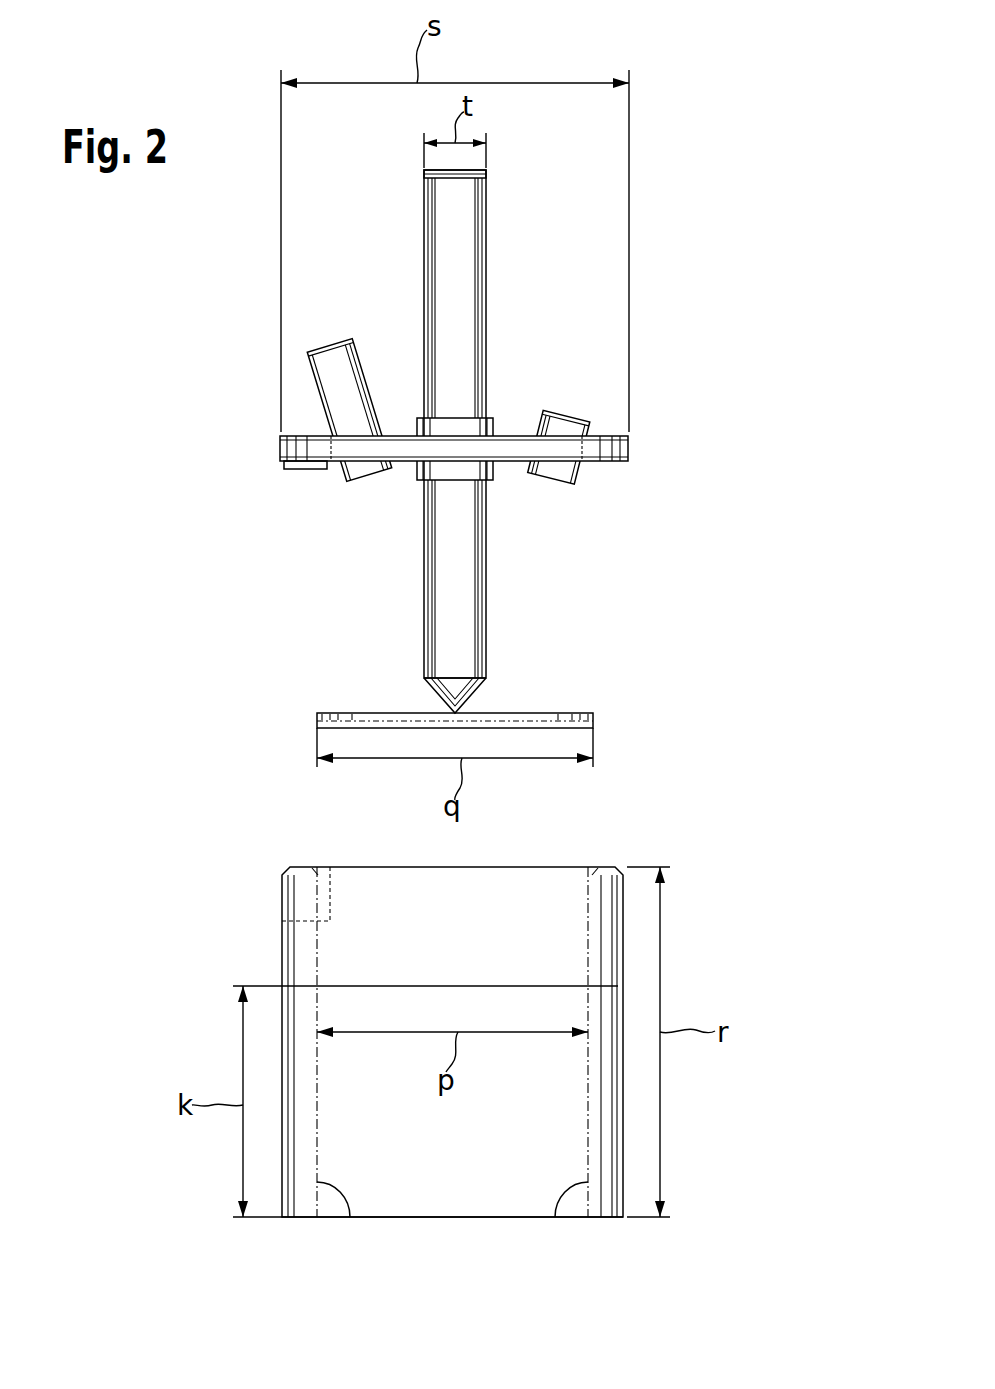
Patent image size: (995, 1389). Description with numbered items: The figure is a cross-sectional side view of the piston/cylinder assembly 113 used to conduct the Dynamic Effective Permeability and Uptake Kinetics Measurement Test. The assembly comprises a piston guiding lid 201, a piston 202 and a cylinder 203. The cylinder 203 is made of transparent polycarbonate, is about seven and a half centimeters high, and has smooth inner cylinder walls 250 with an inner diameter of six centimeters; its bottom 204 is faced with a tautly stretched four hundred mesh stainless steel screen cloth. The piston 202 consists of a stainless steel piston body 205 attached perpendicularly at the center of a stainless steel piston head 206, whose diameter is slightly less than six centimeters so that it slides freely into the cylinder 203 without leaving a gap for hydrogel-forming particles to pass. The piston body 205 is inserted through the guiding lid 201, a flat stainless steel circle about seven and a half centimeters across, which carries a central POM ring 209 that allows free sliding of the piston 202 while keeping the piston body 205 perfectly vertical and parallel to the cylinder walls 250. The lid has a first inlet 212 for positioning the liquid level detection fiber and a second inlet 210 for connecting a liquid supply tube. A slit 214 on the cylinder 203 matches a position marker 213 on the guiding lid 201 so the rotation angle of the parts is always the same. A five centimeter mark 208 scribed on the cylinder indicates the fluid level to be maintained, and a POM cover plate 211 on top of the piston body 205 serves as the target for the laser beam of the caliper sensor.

The piston/cylinder assembly 113 is at (638, 188).
The piston guiding lid 201 is at (628, 447).
The piston 202 is at (487, 563).
The cylinder 203 is at (282, 940).
The bottom of the cylinder 204 is at (437, 1217).
The piston body 205 is at (443, 600).
The piston head 206 is at (355, 713).
The 5 cm mark 208 is at (459, 986).
The POM ring 209 is at (493, 476).
The second inlet 210 is at (582, 470).
The POM cover plate 211 is at (486, 172).
The first inlet 212 is at (322, 395).
The position marker 213 is at (303, 469).
The slit 214 is at (330, 893).
The inner cylinder walls 250 is at (345, 1217).